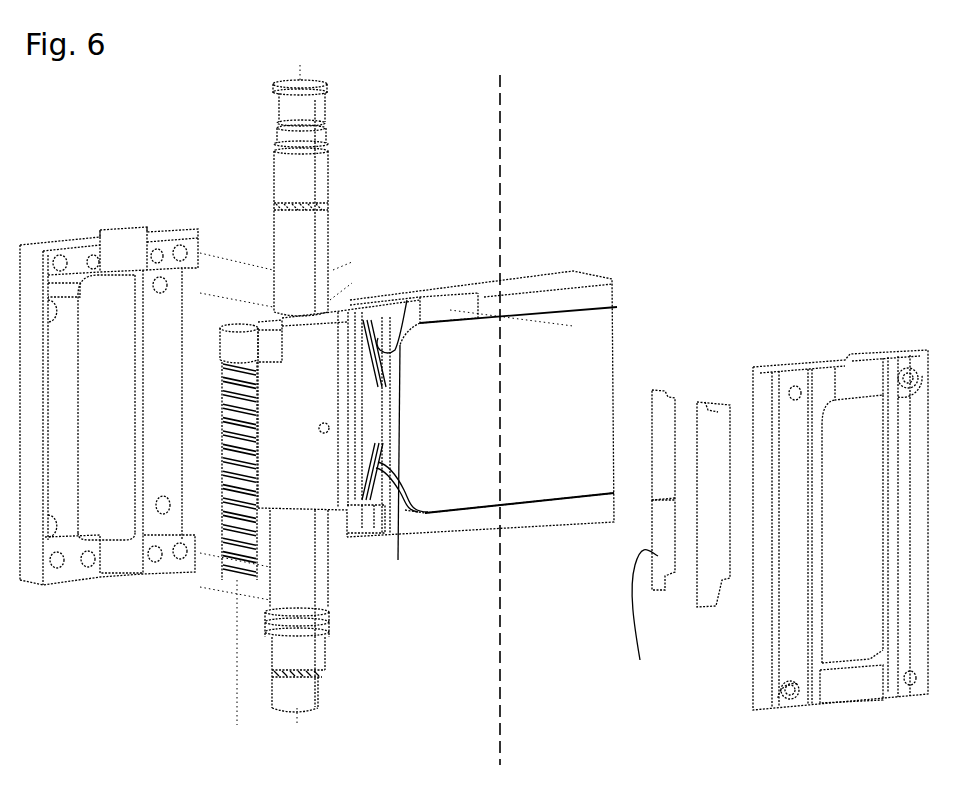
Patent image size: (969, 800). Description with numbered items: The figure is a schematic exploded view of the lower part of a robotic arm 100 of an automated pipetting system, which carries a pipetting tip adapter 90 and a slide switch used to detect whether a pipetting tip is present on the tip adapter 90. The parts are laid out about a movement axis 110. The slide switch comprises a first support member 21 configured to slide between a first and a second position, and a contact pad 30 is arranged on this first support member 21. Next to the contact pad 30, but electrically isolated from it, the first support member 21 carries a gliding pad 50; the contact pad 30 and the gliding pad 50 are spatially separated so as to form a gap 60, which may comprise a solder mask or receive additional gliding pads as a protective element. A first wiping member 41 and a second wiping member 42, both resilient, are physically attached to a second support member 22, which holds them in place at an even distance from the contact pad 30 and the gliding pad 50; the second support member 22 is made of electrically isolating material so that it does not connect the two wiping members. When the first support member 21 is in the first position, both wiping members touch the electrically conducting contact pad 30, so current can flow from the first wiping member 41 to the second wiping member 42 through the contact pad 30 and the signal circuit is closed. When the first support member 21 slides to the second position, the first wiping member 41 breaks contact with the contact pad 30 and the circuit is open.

The first support member 21 is at (60, 588).
The second support member 22 is at (330, 455).
The contact pad 30 is at (668, 405).
The first wiping member 41 is at (398, 565).
The second wiping member 42 is at (407, 300).
The gliding pad 50 is at (639, 626).
The gap 60 is at (652, 500).
The pipetting tip adapter 90 is at (290, 686).
The robotic arm 100 is at (265, 98).
The movement axis 110 is at (500, 167).